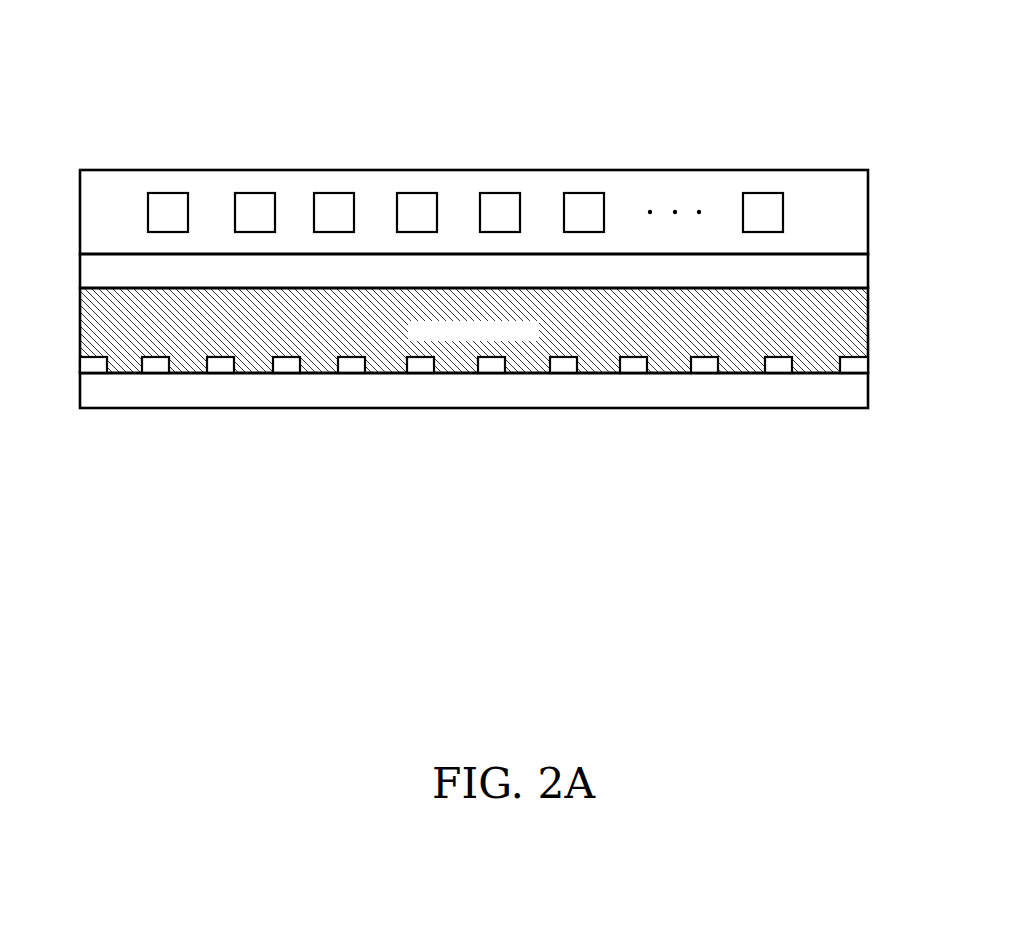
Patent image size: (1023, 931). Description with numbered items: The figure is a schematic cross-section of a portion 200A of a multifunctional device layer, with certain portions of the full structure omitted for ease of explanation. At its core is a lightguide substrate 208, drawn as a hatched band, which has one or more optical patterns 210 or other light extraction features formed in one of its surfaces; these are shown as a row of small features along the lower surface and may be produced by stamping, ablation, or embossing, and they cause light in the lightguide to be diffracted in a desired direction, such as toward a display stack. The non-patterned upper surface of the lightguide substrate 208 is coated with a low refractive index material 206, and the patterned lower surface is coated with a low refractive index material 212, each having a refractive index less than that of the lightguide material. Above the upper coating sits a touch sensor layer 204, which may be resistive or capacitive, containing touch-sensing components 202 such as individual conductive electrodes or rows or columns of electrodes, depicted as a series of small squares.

The portion of multifunctional device layer 200A is at (480, 269).
The touch-sensing components 202 is at (162, 193).
The touch sensor layer 204 is at (520, 193).
The low refractive index material 206 is at (868, 273).
The lightguide substrate 208 is at (868, 325).
The optical pattern 210 is at (812, 363).
The low refractive index material 212 is at (868, 388).